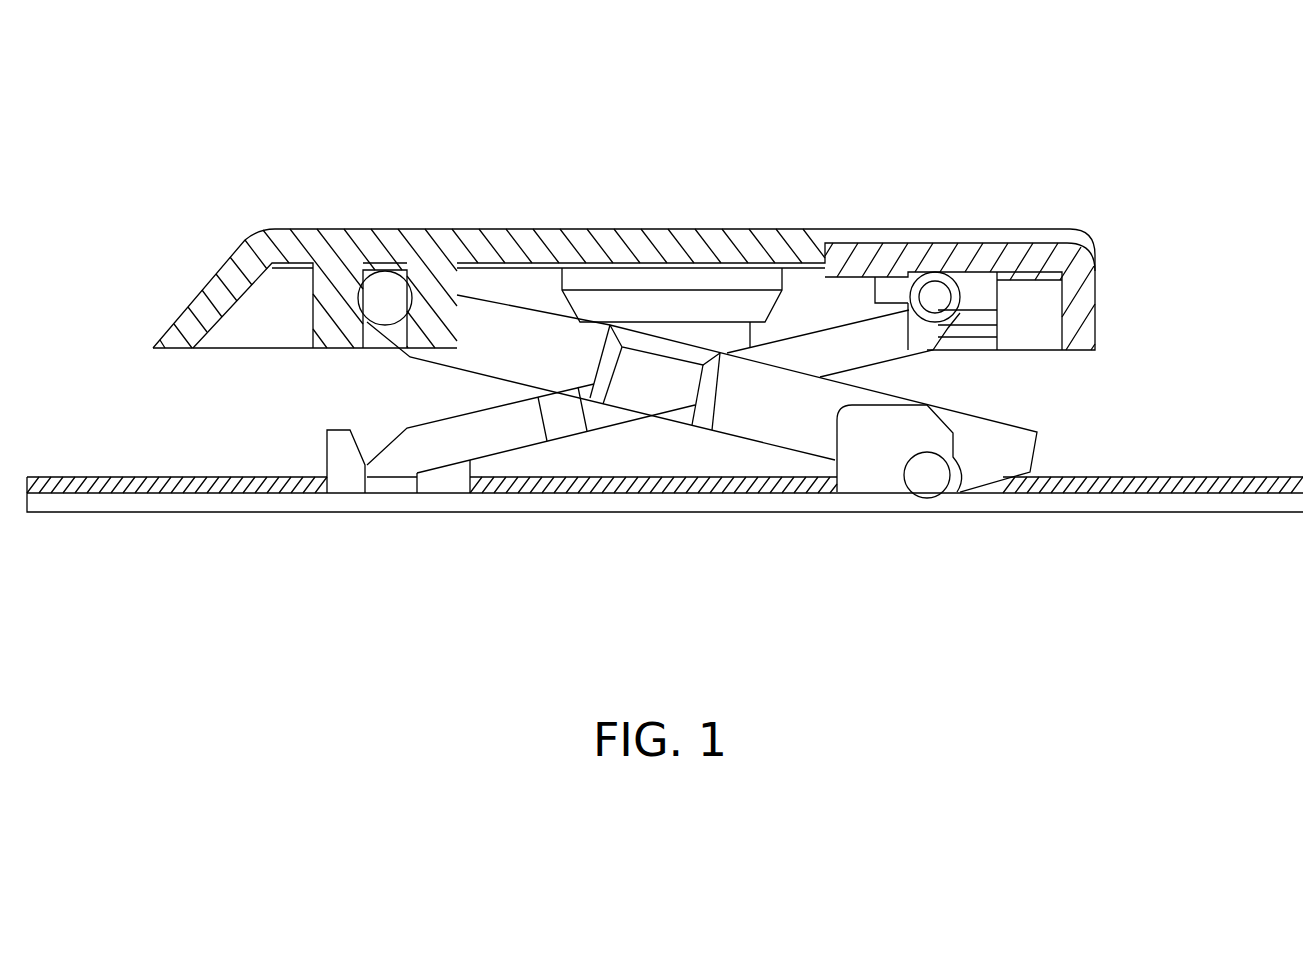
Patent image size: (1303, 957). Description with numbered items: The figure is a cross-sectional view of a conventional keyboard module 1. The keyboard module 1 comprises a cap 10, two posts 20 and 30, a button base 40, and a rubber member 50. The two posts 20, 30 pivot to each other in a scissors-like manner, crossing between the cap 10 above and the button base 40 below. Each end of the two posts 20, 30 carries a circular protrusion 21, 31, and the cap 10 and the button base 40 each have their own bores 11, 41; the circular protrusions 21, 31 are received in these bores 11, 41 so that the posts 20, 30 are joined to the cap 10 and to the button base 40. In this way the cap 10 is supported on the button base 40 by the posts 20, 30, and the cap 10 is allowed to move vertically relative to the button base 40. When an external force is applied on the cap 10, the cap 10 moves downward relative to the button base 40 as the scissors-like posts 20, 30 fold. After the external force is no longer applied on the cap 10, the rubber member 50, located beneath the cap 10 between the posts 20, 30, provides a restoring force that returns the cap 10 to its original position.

The keyboard module 1 is at (36, 76).
The cap 10 is at (752, 243).
The bore 11 is at (977, 290).
The post 20 is at (762, 415).
The circular protrusion 21 is at (385, 290).
The post 30 is at (522, 430).
The circular protrusion 31 is at (935, 290).
The button base 40 is at (1098, 514).
The bore 41 is at (947, 494).
The rubber member 50 is at (652, 282).